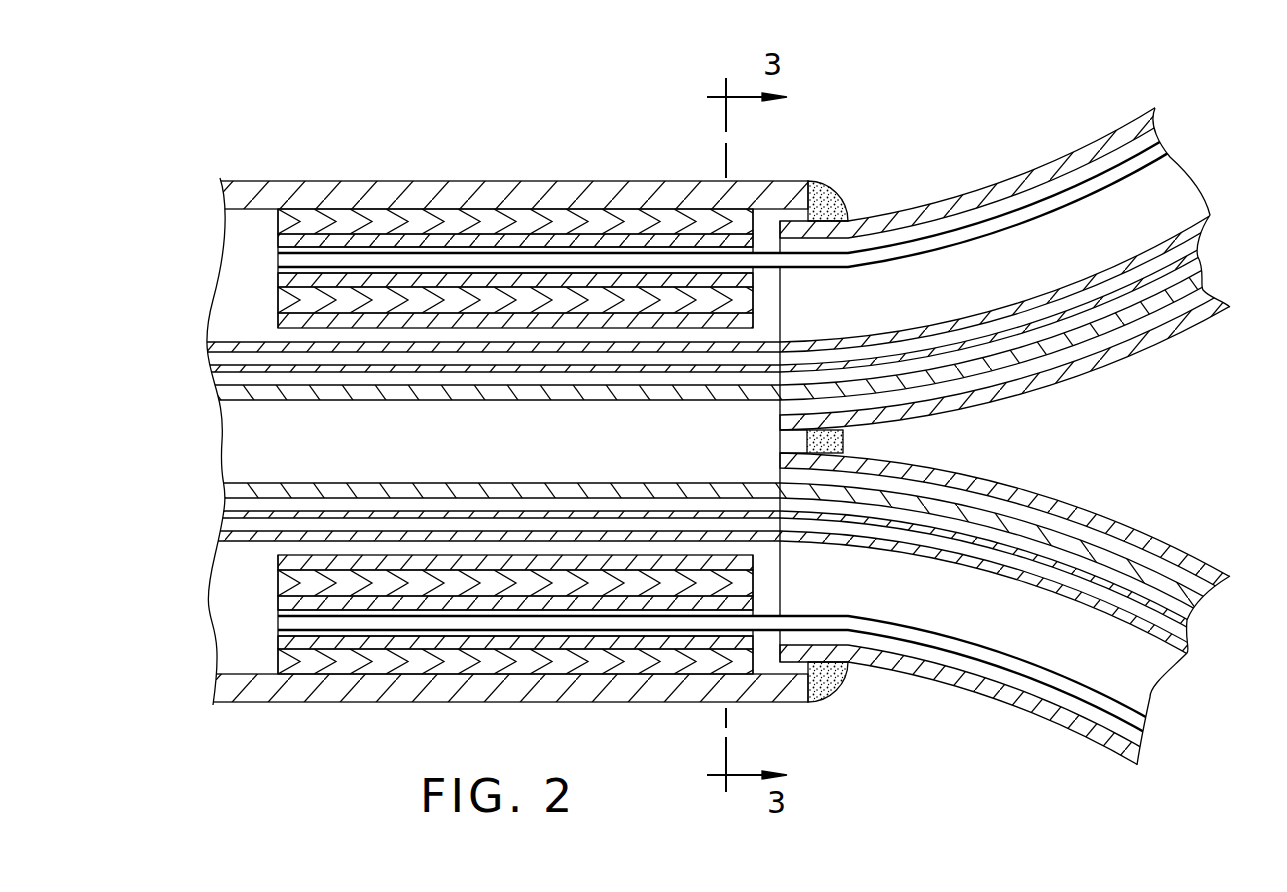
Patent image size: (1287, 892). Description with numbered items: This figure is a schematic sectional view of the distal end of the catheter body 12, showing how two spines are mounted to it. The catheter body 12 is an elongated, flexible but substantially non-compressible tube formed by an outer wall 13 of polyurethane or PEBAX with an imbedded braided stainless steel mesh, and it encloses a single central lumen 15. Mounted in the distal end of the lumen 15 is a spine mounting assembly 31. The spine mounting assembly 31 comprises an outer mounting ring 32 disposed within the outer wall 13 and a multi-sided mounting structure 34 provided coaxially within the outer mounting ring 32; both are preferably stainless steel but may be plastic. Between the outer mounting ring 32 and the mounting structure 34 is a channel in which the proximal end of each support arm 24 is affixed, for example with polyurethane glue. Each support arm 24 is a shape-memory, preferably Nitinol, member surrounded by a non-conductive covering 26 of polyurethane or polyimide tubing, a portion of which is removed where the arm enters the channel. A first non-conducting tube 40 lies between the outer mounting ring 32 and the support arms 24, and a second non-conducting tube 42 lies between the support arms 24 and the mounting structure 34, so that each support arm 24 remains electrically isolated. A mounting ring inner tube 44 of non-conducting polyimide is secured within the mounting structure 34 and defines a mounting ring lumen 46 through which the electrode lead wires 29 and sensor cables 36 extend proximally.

The catheter body 12 is at (290, 115).
The outer wall 13 is at (337, 180).
The lumen 15 is at (252, 573).
The support arm 24 is at (907, 240).
The non-conductive covering 26 is at (1040, 168).
The electrode lead wires 29 is at (335, 352).
The spine mounting assembly 31 is at (255, 643).
The outer mounting ring 32 is at (425, 216).
The mounting structure 34 is at (537, 302).
The sensor cables 36 is at (265, 402).
The first non-conducting tube 40 is at (506, 230).
The second non-conducting tube 42 is at (600, 280).
The mounting ring inner tube 44 is at (433, 330).
The mounting ring lumen 46 is at (283, 337).